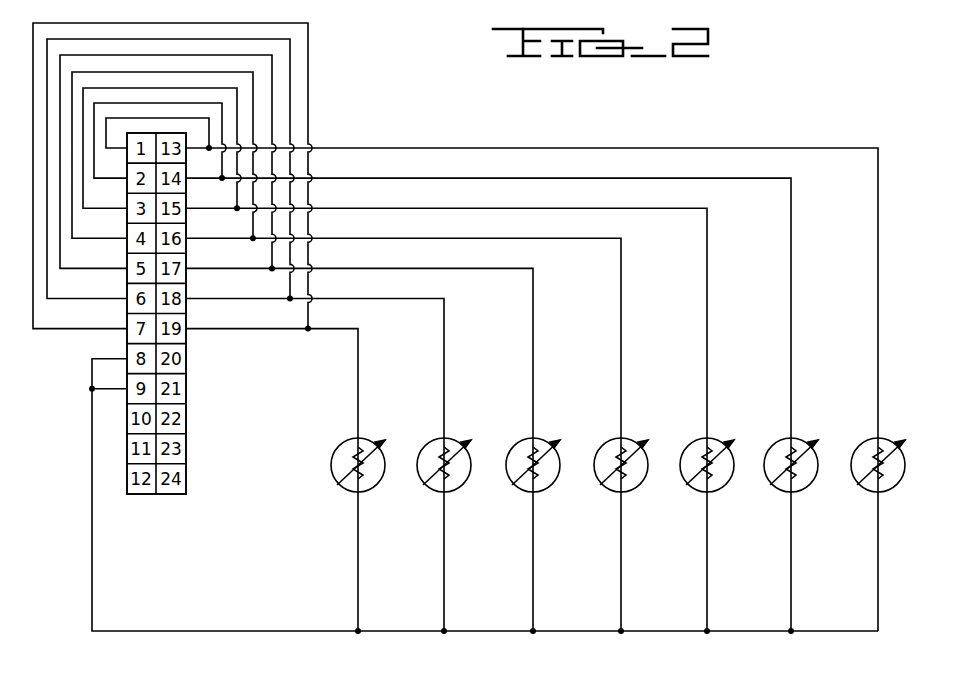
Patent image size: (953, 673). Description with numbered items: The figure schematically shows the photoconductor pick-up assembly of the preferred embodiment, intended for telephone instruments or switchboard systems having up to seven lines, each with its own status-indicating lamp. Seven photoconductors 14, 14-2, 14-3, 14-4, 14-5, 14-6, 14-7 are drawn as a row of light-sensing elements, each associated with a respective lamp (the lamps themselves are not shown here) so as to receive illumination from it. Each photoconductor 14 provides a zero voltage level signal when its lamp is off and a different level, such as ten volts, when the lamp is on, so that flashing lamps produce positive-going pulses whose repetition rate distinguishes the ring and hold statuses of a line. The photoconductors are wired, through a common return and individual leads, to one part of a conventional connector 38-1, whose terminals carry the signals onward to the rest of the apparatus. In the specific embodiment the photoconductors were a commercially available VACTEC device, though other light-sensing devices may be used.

The photoconductor 14 is at (899, 484).
The photoconductor 14-2 is at (816, 484).
The photoconductor 14-3 is at (732, 484).
The photoconductor 14-4 is at (644, 484).
The photoconductor 14-5 is at (556, 484).
The photoconductor 14-6 is at (467, 484).
The photoconductor 14-7 is at (381, 484).
The connector 38-1 is at (186, 392).